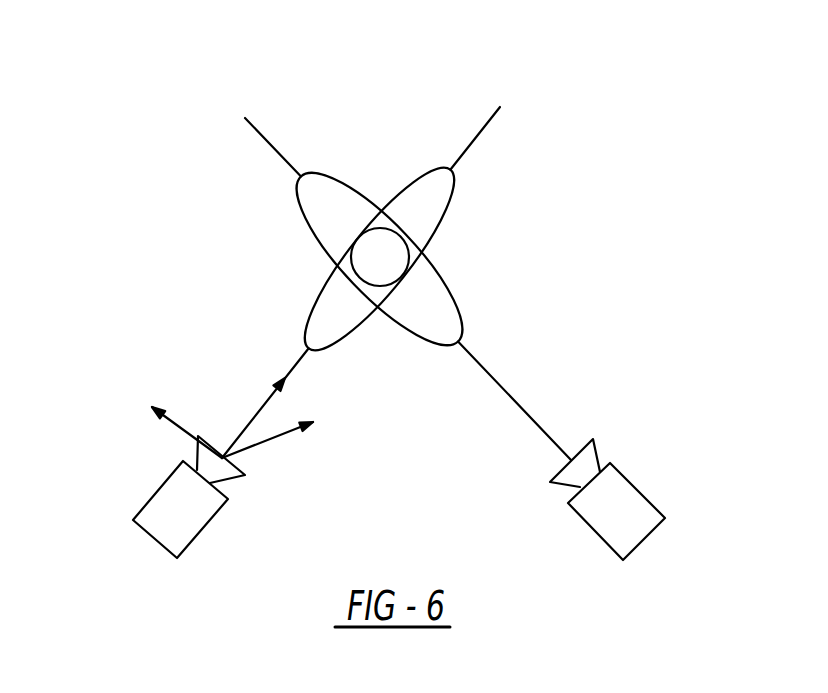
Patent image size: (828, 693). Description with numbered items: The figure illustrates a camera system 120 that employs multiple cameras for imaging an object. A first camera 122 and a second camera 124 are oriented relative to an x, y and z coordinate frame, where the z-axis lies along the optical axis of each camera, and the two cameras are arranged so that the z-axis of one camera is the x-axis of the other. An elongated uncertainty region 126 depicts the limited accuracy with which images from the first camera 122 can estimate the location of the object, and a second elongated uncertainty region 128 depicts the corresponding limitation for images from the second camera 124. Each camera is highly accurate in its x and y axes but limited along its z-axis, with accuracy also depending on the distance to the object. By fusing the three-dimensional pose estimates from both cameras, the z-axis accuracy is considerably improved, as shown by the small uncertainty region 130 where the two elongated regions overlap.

The camera system 120 is at (175, 142).
The first camera 122 is at (153, 493).
The second camera 124 is at (632, 482).
The uncertainty region 126 is at (435, 195).
The uncertainty region 128 is at (323, 196).
The uncertainty region 130 is at (388, 260).